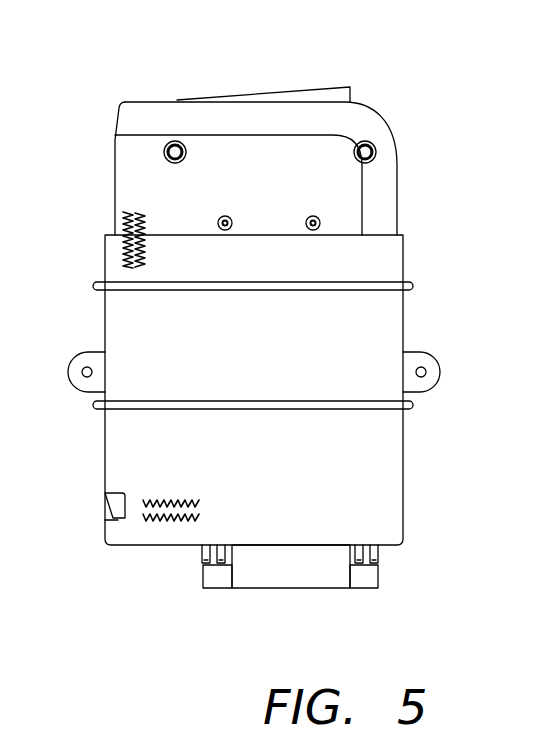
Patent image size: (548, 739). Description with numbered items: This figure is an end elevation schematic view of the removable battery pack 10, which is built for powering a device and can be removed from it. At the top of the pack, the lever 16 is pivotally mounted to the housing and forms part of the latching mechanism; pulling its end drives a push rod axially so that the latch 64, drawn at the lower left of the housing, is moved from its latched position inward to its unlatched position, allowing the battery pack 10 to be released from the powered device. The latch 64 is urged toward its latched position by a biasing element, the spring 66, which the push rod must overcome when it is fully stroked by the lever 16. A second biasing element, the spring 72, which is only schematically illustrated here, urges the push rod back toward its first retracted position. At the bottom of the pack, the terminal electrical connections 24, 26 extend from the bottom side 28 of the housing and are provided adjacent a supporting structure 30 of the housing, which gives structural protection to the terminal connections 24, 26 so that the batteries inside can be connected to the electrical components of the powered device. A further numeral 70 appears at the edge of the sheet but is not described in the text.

The removable battery pack 10 is at (422, 434).
The lever 16 is at (283, 91).
The electrical connection 24 is at (225, 565).
The electrical connection 26 is at (362, 567).
The bottom side 28 is at (125, 547).
The supporting structure 30 is at (283, 578).
The latch 64 is at (105, 510).
The spring 66 is at (168, 527).
The component (partially visible) 70 is at (83, 731).
The spring 72 is at (123, 212).